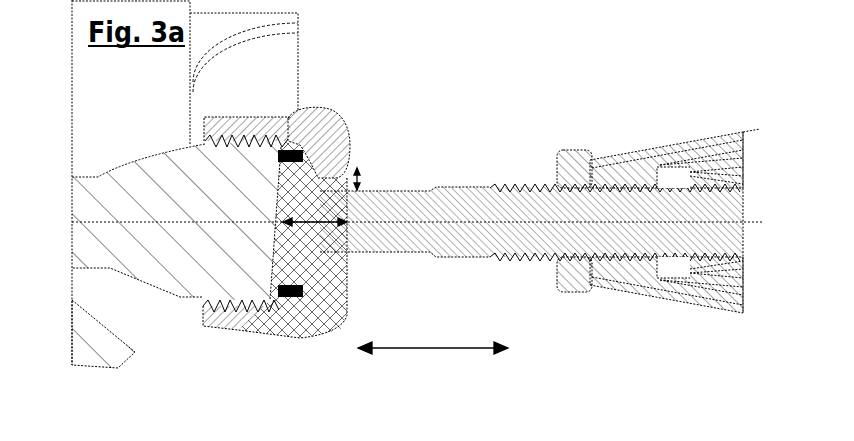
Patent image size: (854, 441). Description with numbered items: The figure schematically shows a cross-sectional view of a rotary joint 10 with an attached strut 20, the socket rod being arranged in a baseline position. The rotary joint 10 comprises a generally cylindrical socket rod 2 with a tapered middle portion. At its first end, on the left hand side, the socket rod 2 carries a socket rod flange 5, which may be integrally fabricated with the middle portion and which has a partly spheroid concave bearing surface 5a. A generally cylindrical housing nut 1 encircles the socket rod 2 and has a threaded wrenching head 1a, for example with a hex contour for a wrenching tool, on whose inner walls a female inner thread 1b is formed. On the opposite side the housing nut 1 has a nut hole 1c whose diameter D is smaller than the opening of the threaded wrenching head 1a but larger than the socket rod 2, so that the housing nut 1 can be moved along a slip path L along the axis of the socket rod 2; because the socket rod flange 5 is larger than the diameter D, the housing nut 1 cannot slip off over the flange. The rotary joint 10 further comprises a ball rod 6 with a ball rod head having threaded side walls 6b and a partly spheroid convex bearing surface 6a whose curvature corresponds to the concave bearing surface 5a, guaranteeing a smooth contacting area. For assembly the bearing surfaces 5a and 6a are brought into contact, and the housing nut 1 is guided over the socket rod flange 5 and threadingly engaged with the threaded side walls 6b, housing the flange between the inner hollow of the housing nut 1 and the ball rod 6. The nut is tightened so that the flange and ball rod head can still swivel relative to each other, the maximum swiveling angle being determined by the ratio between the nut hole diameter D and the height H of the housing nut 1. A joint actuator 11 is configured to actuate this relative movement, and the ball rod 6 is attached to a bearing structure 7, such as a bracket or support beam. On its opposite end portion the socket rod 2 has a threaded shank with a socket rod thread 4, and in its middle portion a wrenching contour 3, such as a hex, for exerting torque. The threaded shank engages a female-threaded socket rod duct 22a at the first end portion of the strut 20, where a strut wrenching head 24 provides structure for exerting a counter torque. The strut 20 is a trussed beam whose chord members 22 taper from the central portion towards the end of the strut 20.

The housing nut 1 is at (327, 110).
The threaded wrenching head 1a is at (210, 128).
The inner thread 1b is at (250, 133).
The nut hole 1c is at (340, 267).
The socket rod 2 is at (413, 195).
The wrenching contour 3 is at (463, 187).
The socket rod thread 4 is at (513, 192).
The socket rod flange 5 is at (300, 277).
The concave bearing surface 5a is at (280, 253).
The ball rod 6 is at (150, 290).
The convex bearing surface 6a is at (283, 202).
The threaded side walls 6b is at (218, 315).
The bearing structure 7 is at (72, 88).
The rotary joint 10 is at (327, 57).
The joint actuator 11 is at (295, 147).
The strut 20 is at (728, 113).
The chord members 22 is at (680, 157).
The female-threaded socket rod duct 22a is at (628, 240).
The strut wrenching head 24 is at (573, 150).
The height of the housing nut H is at (318, 222).
The nut hole diameter D is at (367, 182).
The slip path L is at (422, 350).